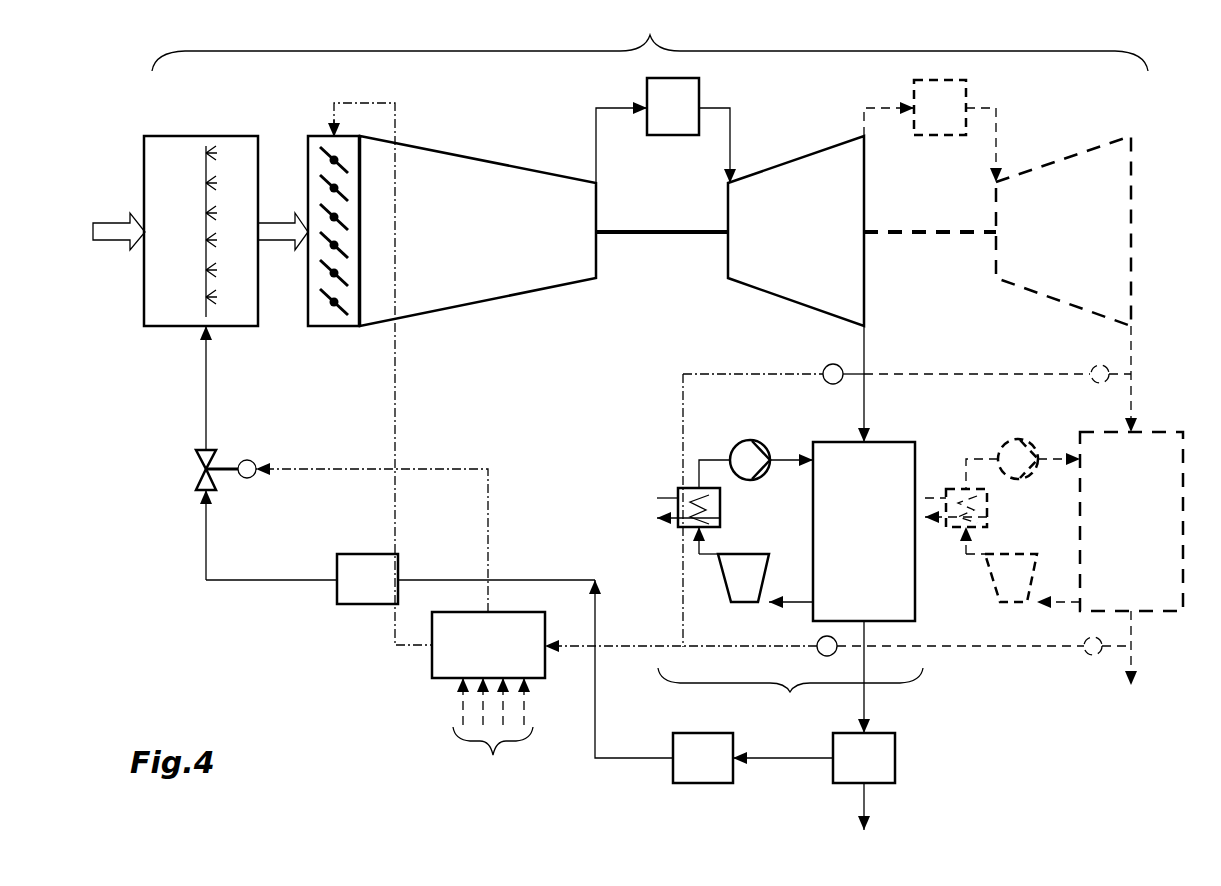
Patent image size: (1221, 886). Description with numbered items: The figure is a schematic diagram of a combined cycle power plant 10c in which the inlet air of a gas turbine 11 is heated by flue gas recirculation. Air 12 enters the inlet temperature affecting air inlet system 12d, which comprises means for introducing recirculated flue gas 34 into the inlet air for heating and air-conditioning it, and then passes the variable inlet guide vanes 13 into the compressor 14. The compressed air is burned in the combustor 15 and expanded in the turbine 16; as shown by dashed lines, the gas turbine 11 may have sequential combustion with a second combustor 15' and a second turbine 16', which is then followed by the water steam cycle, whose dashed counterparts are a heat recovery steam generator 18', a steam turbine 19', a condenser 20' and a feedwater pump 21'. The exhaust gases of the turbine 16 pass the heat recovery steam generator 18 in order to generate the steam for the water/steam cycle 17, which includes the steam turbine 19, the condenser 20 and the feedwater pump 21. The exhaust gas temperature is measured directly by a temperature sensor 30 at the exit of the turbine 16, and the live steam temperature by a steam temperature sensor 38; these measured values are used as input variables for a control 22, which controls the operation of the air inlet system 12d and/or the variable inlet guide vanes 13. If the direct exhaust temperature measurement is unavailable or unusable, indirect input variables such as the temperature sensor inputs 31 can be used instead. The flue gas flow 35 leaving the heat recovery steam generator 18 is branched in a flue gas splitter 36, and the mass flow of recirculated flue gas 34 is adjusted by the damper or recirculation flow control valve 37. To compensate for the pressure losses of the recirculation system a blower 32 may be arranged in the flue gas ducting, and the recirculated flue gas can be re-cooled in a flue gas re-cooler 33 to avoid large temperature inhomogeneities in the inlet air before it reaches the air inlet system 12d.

The gas turbine 11 is at (650, 35).
The air 12 is at (113, 238).
The inlet temperature affecting air inlet system 12d is at (175, 308).
The variable inlet guide vanes 13 is at (330, 317).
The compressor 14 is at (434, 252).
The gas turbine 10c is at (640, 336).
The combustor 15 is at (663, 136).
The turbine 16 is at (796, 289).
The second combustor 15' is at (930, 137).
The second turbine 16' is at (997, 284).
The temperature sensor 30 is at (823, 368).
The heat recovery steam generator 18 is at (864, 531).
The second heat recovery steam generator 18' is at (1131, 558).
The feedwater pump 21 is at (746, 449).
The second feedwater pump 21' is at (1023, 464).
The condenser 20 is at (673, 533).
The second heat exchanger 20' is at (956, 521).
The steam turbine 19 is at (746, 600).
The second condenser 19' is at (1032, 578).
The steam temperature sensor 38 is at (837, 650).
The water/steam cycle 17 is at (790, 701).
The flue gas splitter 36 is at (848, 773).
The flue gas outlet 35 is at (866, 798).
The measuring unit 32 is at (687, 773).
The flue gas re-cooler 33 is at (351, 594).
The recirculated flue gas 34 is at (204, 527).
The recirculation flow control valve 37 is at (250, 478).
The control 22 is at (470, 664).
The temperature sensor inputs 31 is at (493, 738).